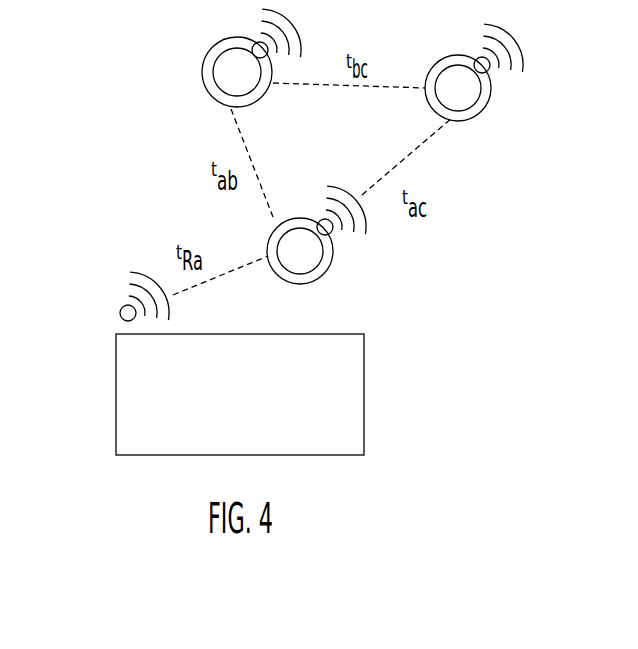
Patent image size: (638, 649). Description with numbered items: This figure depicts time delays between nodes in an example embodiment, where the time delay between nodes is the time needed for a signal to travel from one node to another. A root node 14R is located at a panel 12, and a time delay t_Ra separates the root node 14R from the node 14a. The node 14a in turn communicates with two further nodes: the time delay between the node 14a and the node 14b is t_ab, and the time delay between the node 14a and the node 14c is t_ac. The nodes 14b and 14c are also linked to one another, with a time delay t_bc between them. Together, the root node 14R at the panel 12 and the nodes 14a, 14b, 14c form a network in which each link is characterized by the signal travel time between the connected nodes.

The panel 12 is at (203, 406).
The node 14a is at (318, 278).
The node 14b is at (203, 80).
The node 14c is at (489, 100).
The root node 14R is at (130, 283).